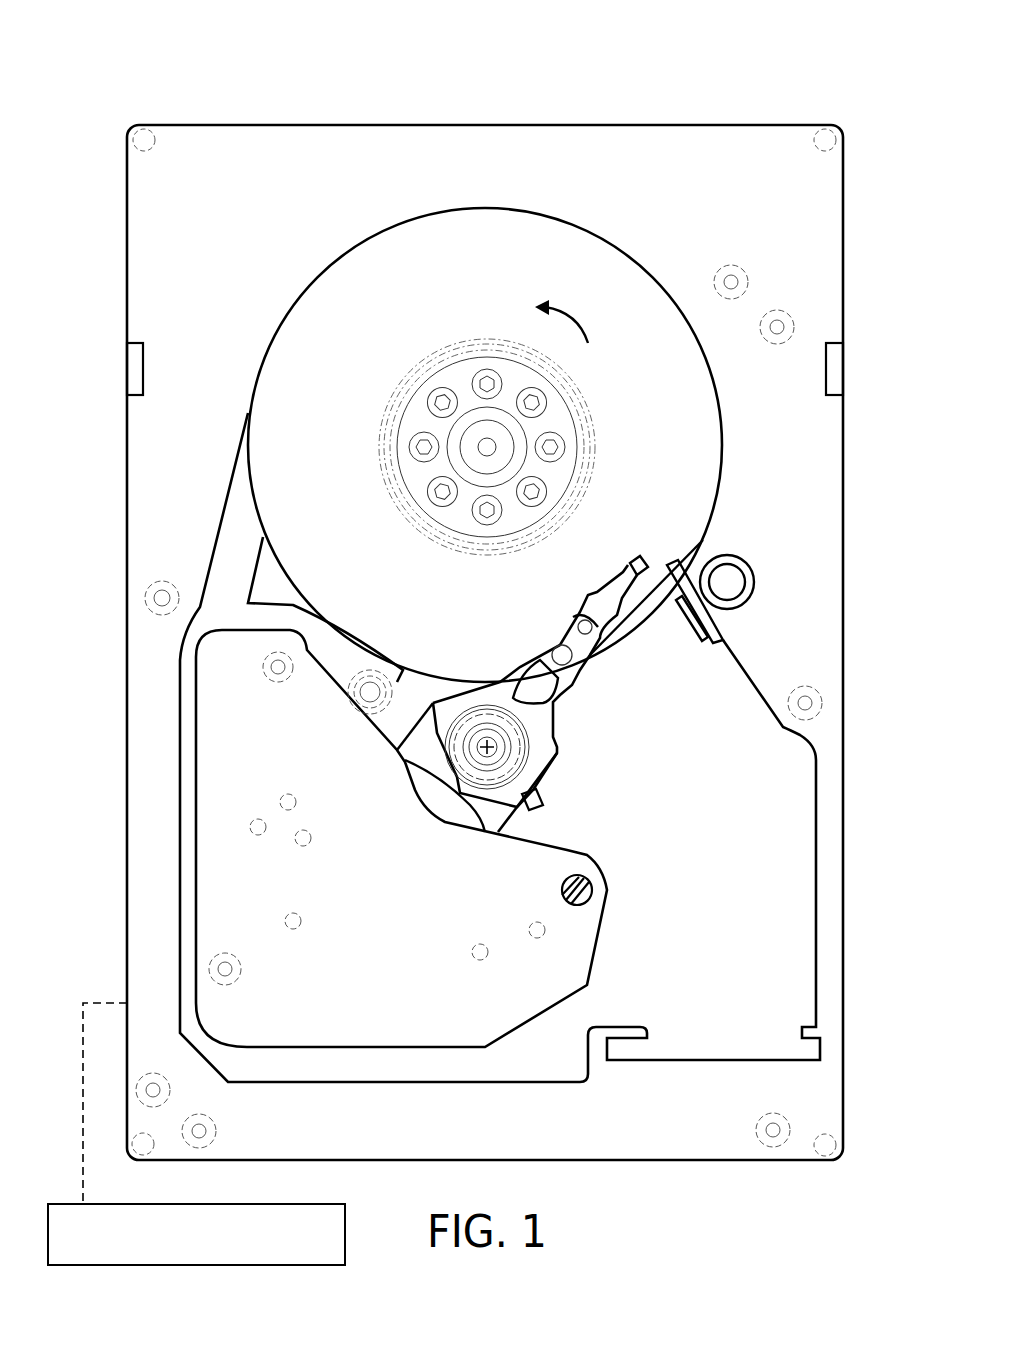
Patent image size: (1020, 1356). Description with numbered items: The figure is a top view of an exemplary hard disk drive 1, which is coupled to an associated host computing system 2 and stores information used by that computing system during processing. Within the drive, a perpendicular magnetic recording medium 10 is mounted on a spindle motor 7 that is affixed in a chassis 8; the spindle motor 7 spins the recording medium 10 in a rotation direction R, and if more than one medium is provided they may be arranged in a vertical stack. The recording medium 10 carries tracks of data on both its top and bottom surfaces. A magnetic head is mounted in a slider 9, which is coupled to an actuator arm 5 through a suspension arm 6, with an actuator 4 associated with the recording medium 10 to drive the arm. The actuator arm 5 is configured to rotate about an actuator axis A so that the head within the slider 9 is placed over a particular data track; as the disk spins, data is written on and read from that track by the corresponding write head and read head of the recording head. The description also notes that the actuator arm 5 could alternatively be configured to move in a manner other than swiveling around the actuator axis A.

The hard disk drive 1 is at (393, 45).
The host computing system 2 is at (204, 1259).
The actuator 4 is at (580, 943).
The actuator arm 5 is at (572, 633).
The suspension arm 6 is at (607, 603).
The spindle motor 7 is at (500, 447).
The chassis 8 is at (520, 123).
The slider 9 is at (633, 560).
The perpendicular magnetic recording medium 10 is at (517, 253).
The actuator axis A is at (490, 747).
The rotation direction R is at (563, 313).